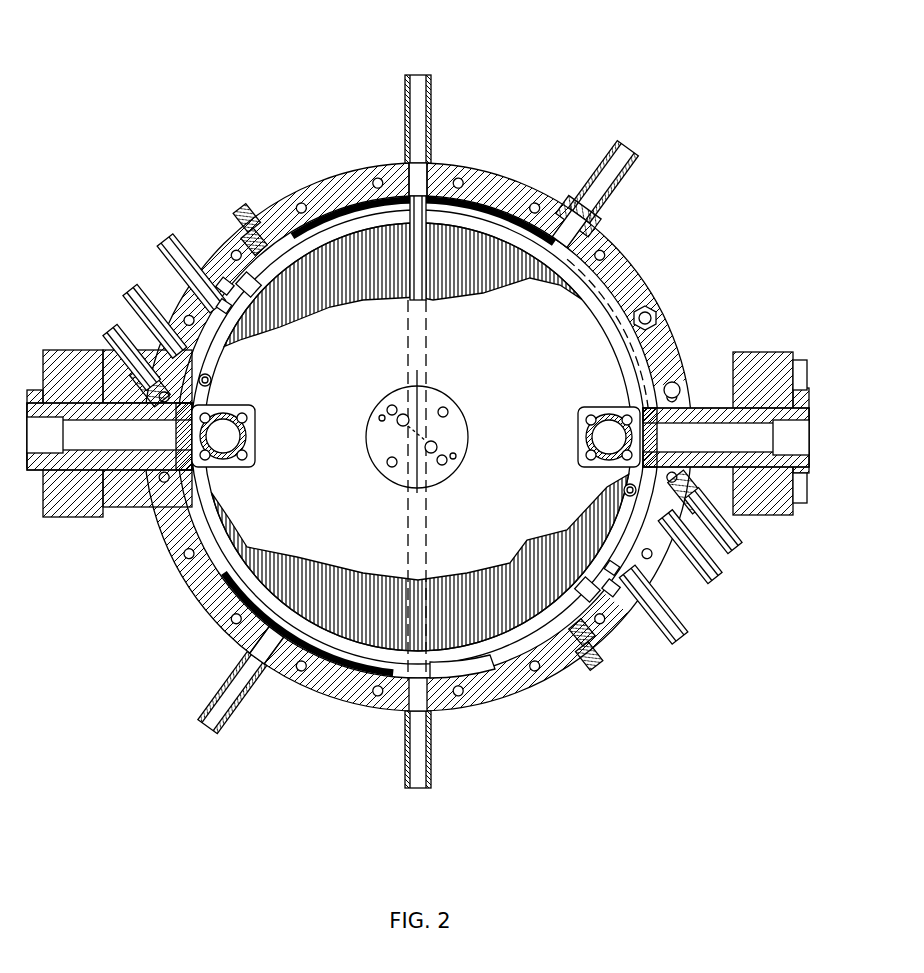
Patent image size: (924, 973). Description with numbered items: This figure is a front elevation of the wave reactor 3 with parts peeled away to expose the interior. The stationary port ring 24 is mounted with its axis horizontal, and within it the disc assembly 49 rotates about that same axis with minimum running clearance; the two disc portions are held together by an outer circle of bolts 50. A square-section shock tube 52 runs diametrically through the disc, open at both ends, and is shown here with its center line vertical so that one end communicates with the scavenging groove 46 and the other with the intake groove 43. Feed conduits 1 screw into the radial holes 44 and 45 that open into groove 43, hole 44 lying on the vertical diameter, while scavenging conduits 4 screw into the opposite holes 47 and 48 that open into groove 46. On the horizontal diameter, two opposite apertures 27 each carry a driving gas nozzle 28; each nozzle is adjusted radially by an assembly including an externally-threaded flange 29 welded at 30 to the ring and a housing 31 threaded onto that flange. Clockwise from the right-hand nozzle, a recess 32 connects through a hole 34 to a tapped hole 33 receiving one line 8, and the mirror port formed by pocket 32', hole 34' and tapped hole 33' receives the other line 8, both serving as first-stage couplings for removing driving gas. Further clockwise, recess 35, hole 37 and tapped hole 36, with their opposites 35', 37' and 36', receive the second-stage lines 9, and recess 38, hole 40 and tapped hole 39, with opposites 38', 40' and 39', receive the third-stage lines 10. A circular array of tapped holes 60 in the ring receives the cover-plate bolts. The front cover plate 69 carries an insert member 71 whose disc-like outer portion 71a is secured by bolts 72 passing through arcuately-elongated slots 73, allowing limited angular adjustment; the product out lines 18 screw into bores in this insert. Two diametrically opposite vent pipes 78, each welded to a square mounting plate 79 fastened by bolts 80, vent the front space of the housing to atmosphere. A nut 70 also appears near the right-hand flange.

The reactant material feed conduit 1 is at (406, 768).
The wave reactor 3 is at (652, 250).
The scavenging conduit 4 is at (420, 115).
The line 8 is at (118, 336).
The line 9 is at (136, 305).
The line 10 is at (172, 258).
The product out line 18 is at (408, 416).
The stationary port ring 24 is at (490, 165).
The aperture 27 is at (418, 436).
The nozzle 28 is at (92, 446).
The externally-threaded flange 29 is at (80, 355).
The weld 30 is at (124, 470).
The housing 31 is at (790, 355).
The pocket or recess 32 is at (618, 446).
The pocket 32' is at (174, 436).
The tapped hole 33 is at (696, 492).
The tapped hole 33' is at (140, 385).
The hole 34 is at (596, 485).
The hole 34' is at (223, 389).
The pocket or recess 35 is at (581, 545).
The pocket 35' is at (235, 322).
The tapped hole 36 is at (628, 605).
The tapped hole 36' is at (194, 266).
The hole 37 is at (598, 539).
The hole 37' is at (229, 342).
The pocket or recess 38 is at (554, 555).
The pocket 38' is at (262, 313).
The tapped hole 39 is at (609, 635).
The tapped hole 39' is at (216, 227).
The hole 40 is at (418, 437).
The hole 40' is at (294, 335).
The arcuately-elongated groove 43 is at (440, 672).
The radially-extending hole 44 is at (404, 690).
The radially-extending hole 45 is at (252, 665).
The arcuately-elongated groove 46 is at (560, 230).
The radially-extending hole 47 is at (412, 190).
The radially-extending hole 48 is at (568, 238).
The disc assembly 49 is at (393, 616).
The bolt 50 is at (357, 218).
The shock tube 52 is at (410, 262).
The tapped hole 60 is at (370, 178).
The front cover plate 69 is at (478, 322).
The nut 70 is at (676, 383).
The insert member 71 is at (392, 446).
The disc-like outer portion 71a is at (450, 434).
The bolt 72 is at (388, 406).
The arcuately-elongated slot 73 is at (388, 405).
The vent pipe 78 is at (240, 436).
The square mounting plate 79 is at (228, 468).
The bolt 80 is at (247, 418).